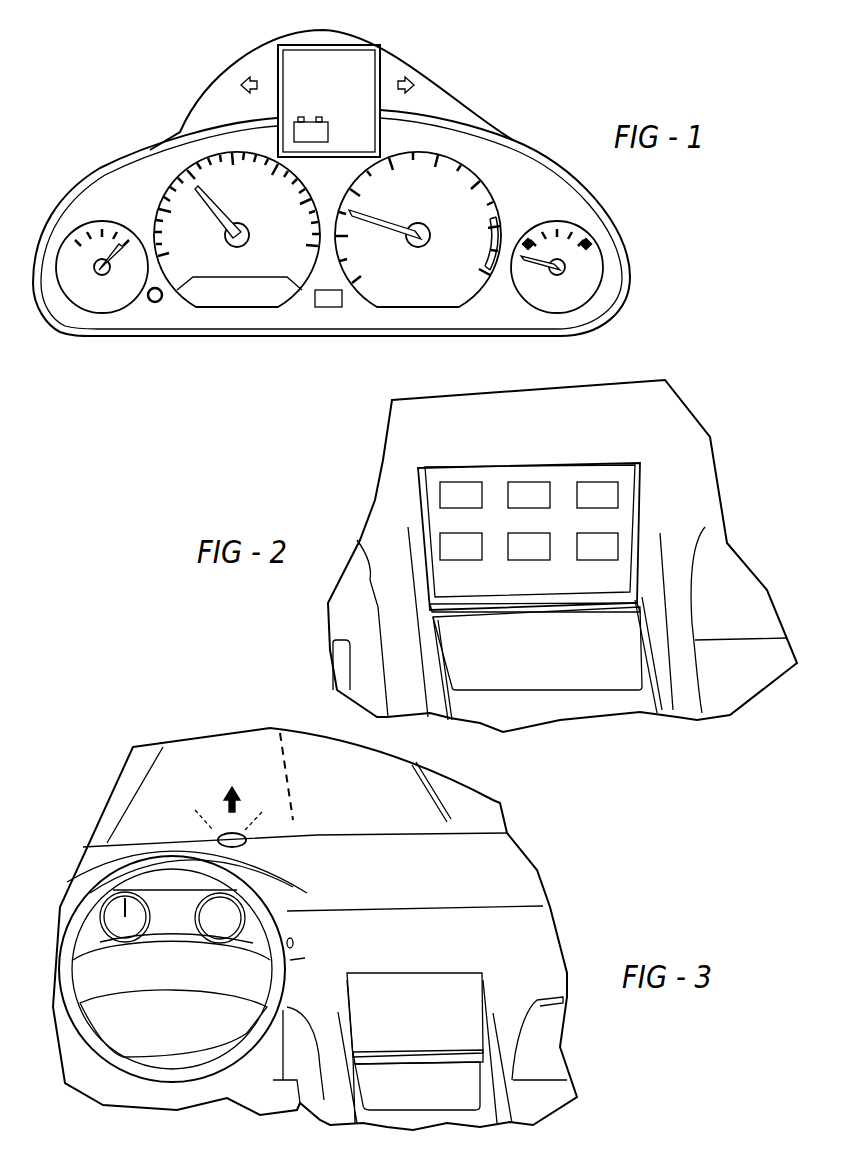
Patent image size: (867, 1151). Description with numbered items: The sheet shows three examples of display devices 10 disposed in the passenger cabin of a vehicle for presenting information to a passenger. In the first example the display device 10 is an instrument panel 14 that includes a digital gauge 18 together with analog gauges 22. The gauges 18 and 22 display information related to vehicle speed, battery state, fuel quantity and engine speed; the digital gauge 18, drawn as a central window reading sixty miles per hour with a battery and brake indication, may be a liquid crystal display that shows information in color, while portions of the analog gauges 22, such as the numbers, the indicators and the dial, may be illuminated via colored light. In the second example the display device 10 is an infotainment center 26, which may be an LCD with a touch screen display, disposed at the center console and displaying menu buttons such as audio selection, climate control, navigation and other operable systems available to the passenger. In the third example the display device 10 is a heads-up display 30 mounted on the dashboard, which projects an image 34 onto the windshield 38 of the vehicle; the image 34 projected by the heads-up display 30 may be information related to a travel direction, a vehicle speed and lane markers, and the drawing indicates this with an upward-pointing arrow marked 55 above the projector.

In FIG. 1, the display device 10 is at (190, 355).
In FIG. 2, the display device 10 is at (365, 470).
In FIG. 3, the display device 10 is at (167, 727).
In FIG. 1, the instrument panel 14 is at (472, 70).
In FIG. 1, the digital gauge 18 is at (250, 55).
In FIG. 1, the analog gauge 22 is at (97, 220).
In FIG. 2, the infotainment center 26 is at (617, 448).
In FIG. 3, the heads-up display (HUD) 30 is at (257, 848).
In FIG. 3, the image 34 is at (253, 787).
In FIG. 3, the windshield 38 is at (363, 767).
In FIG. 3, the direction arrow 55 is at (234, 784).